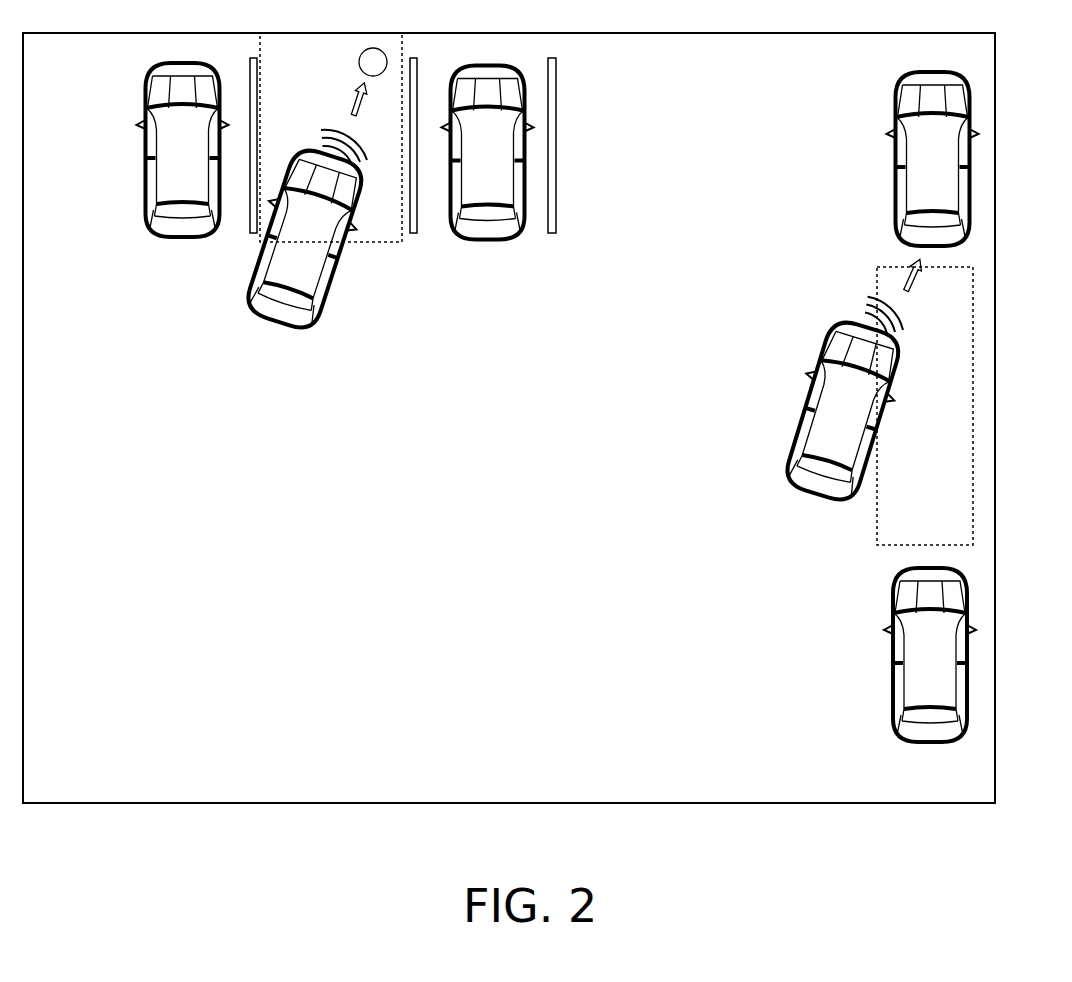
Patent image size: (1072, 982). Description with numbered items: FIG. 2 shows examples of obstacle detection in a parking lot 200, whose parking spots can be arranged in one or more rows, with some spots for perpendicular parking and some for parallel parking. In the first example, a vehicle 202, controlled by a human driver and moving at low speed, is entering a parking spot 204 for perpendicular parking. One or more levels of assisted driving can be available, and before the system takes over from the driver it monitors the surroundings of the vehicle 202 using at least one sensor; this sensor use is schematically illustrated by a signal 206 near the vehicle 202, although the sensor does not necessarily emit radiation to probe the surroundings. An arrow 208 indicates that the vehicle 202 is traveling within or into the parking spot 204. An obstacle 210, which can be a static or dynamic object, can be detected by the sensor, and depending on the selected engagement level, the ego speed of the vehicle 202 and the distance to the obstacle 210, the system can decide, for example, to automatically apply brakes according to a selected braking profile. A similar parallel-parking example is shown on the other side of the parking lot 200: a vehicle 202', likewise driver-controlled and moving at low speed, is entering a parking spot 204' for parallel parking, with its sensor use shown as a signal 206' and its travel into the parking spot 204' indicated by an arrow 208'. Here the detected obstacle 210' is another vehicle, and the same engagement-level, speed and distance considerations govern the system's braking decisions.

The parking lot 200 is at (90, 88).
The vehicle 202 is at (304, 250).
The parking spot 204 is at (340, 160).
The signal 206 is at (320, 131).
The arrow 208 is at (334, 86).
The obstacle 210 is at (342, 39).
The vehicle 202' is at (821, 410).
The parking spot 204' is at (964, 406).
The signal 206' is at (917, 313).
The arrow 208' is at (879, 264).
The obstacle 210' is at (970, 159).